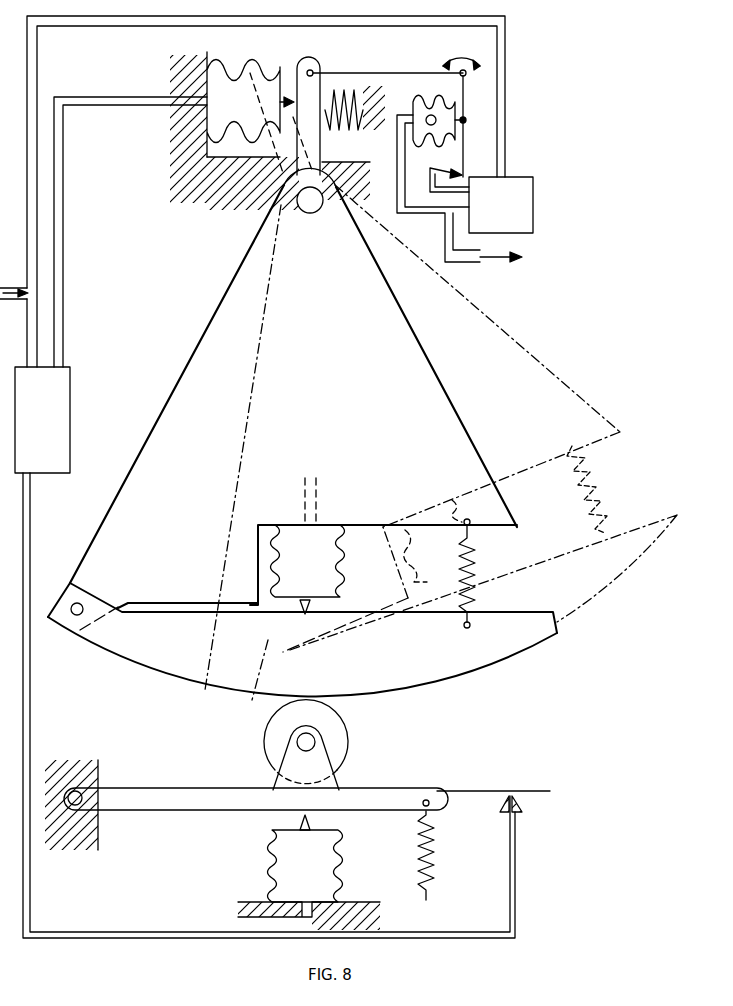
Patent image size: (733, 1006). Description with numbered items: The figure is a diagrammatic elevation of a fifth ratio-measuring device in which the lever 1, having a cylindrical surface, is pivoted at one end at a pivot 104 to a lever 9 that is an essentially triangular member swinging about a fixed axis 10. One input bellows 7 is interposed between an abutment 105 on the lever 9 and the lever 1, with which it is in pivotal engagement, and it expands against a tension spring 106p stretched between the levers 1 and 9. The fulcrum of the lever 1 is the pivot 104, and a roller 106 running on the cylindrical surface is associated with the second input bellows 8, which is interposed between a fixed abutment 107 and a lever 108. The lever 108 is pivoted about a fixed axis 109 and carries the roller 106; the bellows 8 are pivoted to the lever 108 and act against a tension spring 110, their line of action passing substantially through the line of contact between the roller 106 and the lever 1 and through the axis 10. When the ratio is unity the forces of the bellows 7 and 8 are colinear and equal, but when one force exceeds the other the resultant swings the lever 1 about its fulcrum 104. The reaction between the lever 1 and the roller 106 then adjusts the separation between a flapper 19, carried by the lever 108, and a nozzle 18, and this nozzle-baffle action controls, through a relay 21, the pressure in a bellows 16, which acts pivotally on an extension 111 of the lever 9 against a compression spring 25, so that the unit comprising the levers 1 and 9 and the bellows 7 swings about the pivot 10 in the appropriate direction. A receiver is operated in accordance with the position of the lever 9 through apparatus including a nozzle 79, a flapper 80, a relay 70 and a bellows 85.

The lever 1 is at (513, 640).
The input bellows 7 is at (322, 548).
The second input bellows 8 is at (278, 858).
The lever 9 is at (215, 322).
The fixed axis 10 is at (302, 200).
The bellows 16 is at (228, 80).
The nozzle 18 is at (514, 815).
The flapper 19 is at (468, 791).
The relay 21 is at (65, 401).
The compression spring 25 is at (344, 122).
The relay 70 is at (512, 190).
The nozzle 79 is at (452, 163).
The flapper 80 is at (464, 127).
The bellows 85 is at (430, 97).
The pivot 104 is at (75, 615).
The abutment 105 is at (370, 525).
The roller 106 is at (340, 745).
The tension spring 106p is at (477, 553).
The fixed abutment 107 is at (360, 912).
The lever 108 is at (167, 791).
The fixed axis 109 is at (80, 806).
The tension spring 110 is at (432, 876).
The extension 111 is at (316, 60).